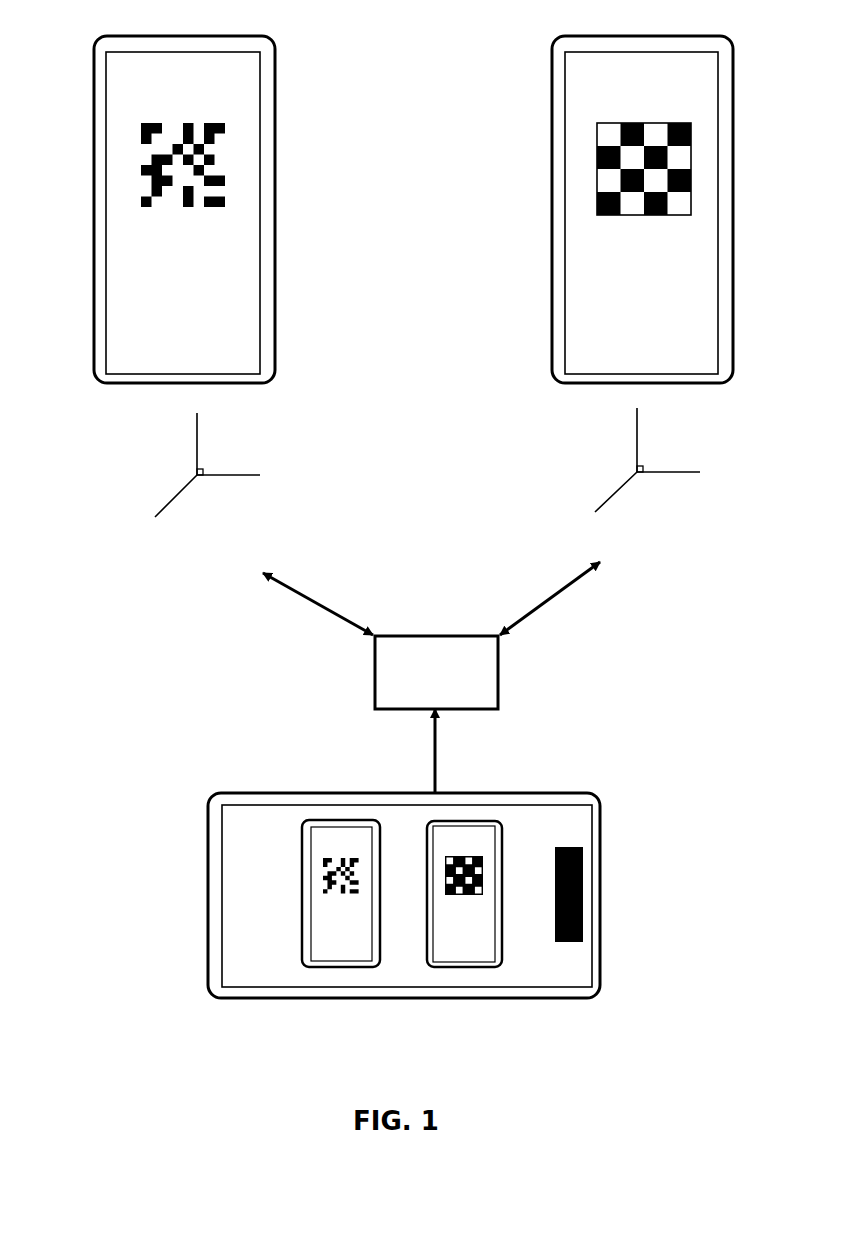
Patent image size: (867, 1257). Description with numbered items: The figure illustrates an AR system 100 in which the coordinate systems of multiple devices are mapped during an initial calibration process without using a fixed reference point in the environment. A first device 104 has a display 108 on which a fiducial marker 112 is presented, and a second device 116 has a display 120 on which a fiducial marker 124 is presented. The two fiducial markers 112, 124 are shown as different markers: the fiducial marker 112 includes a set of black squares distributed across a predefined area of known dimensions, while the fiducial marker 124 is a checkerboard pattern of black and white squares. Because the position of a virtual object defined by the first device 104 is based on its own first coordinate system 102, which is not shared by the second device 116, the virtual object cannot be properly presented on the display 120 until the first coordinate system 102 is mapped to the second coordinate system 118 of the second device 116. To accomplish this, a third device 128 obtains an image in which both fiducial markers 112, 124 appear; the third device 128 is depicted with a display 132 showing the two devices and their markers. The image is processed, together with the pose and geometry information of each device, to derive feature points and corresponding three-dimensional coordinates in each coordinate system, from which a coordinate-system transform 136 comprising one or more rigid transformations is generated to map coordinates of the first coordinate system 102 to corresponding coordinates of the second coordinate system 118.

The AR system 100 is at (168, 1102).
The first coordinate system 102 is at (197, 455).
The first device 104 is at (201, 499).
The display of the first device 108 is at (106, 104).
The fiducial marker 112 is at (142, 170).
The second device 116 is at (560, 499).
The second coordinate system 118 is at (637, 440).
The display of the second device 120 is at (565, 104).
The fiducial marker 124 is at (597, 162).
The third device 128 is at (378, 875).
The camera display 132 is at (326, 808).
The coordinate-system transform 136 is at (445, 636).